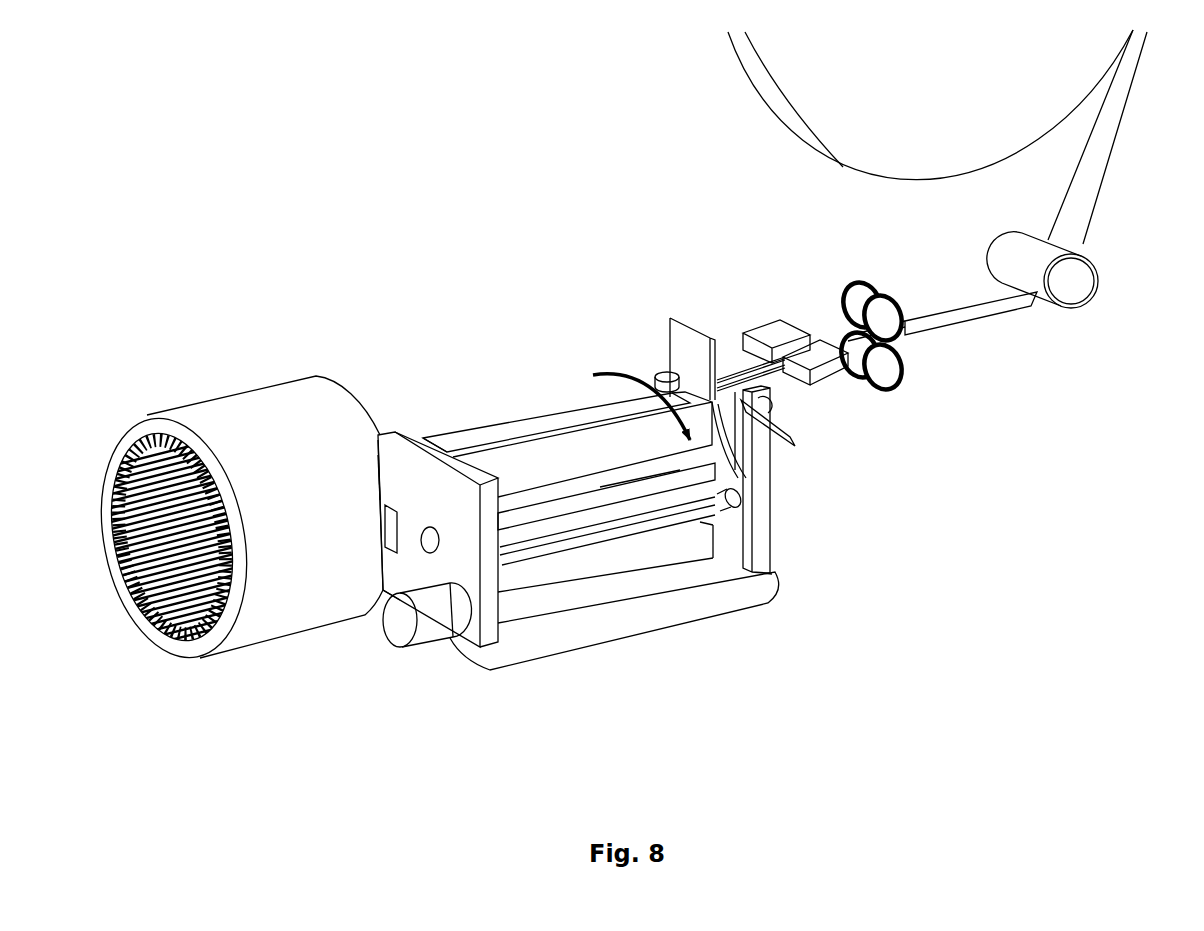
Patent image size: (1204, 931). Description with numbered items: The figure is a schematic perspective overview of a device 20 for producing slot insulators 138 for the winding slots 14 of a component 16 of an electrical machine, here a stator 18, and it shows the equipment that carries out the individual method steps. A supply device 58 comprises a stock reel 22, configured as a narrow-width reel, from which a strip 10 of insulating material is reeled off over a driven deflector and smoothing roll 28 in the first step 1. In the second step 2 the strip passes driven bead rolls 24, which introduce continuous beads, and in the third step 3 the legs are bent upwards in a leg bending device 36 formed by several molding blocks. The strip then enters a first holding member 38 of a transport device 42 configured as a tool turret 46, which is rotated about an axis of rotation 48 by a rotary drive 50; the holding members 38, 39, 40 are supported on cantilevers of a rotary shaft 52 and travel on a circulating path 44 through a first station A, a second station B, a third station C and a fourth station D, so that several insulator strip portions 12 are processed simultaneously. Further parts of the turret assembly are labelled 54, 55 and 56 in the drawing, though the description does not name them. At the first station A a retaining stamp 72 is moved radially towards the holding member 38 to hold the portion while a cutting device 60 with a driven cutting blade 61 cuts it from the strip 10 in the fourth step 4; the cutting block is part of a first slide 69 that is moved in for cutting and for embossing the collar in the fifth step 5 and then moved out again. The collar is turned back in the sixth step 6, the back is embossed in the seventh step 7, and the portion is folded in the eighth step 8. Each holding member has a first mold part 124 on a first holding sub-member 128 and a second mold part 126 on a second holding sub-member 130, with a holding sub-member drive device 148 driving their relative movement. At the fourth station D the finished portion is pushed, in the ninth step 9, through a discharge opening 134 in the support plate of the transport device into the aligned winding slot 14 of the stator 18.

The first step 1 is at (972, 244).
The second step 2 is at (841, 267).
The third step 3 is at (760, 301).
The fourth step 4 is at (623, 322).
The fifth step 5 is at (630, 331).
The sixth step 6 is at (760, 493).
The seventh step 7 is at (522, 619).
The eighth step 8 is at (380, 591).
The ninth step 9 is at (382, 497).
The strip 10 is at (737, 357).
The insulator strip portion 12 is at (160, 602).
The winding slot 14 is at (140, 597).
The component of an electrical machine 16 is at (242, 665).
The stator 18 is at (253, 632).
The device 20 is at (1121, 689).
The stock reel 22 is at (793, 61).
The bead rolls 24 is at (894, 373).
The deflector and smoothing roll 28 is at (1073, 287).
The leg bending device 36 is at (792, 311).
The first holding member 38 is at (543, 407).
The second holding member 39 is at (684, 471).
The third holding member 40 is at (600, 590).
The transport device 42 is at (515, 641).
The circulating path 44 is at (598, 357).
The tool turret 46 is at (482, 392).
The axis of rotation 48 is at (437, 600).
The rotary drive 50 is at (442, 627).
The rotary shaft 52 is at (425, 553).
The top plate 54 is at (517, 407).
The rail 55 is at (661, 531).
The tray 56 is at (582, 592).
The supply device 58 is at (1036, 411).
The cutting device 60 is at (661, 307).
The cutting blade 61 is at (678, 330).
The first slide 69 is at (795, 445).
The retaining stamp 72 is at (656, 368).
The first mold part 124 is at (773, 585).
The second mold part 126 is at (713, 533).
The first holding sub-member 128 is at (391, 504).
The second holding sub-member 130 is at (475, 422).
The discharge opening 134 is at (366, 521).
The slot insulator 138 is at (193, 634).
The holding sub-member drive device 148 is at (375, 575).
The first station A is at (563, 403).
The second station B is at (655, 546).
The third station C is at (638, 594).
The fourth station D is at (368, 501).